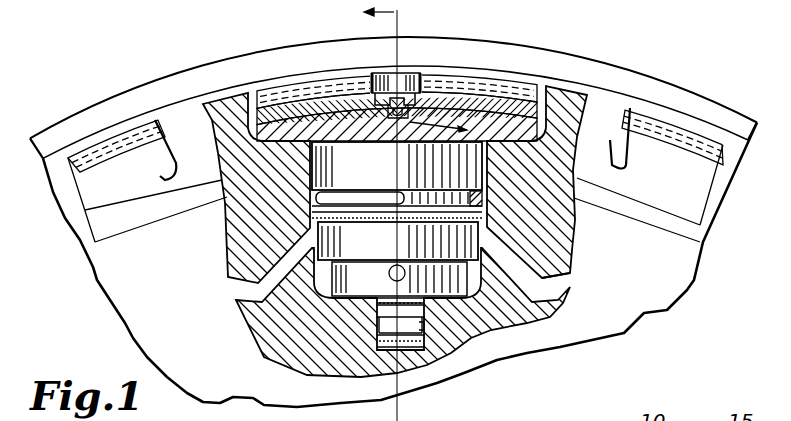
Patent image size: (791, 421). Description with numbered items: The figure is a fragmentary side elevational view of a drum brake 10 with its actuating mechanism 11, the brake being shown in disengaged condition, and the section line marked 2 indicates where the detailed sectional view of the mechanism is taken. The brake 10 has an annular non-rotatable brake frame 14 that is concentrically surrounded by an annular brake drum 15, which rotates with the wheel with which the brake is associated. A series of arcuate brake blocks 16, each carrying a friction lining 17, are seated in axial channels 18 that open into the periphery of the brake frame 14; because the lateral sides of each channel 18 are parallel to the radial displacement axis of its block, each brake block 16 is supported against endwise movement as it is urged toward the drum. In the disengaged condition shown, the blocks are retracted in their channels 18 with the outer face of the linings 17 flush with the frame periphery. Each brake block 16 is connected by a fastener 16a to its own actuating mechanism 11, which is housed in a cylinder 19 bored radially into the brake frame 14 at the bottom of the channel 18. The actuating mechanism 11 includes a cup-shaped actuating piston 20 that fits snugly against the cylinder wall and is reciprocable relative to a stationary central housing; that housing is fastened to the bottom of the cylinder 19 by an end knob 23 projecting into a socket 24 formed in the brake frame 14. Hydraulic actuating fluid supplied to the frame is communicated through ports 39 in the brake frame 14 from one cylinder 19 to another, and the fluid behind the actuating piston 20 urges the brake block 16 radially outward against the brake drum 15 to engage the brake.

The section line 2- 2 is at (368, 212).
The drum brake 10 is at (672, 44).
The actuating mechanism 11 is at (353, 171).
The brake frame 14 is at (660, 292).
The brake drum 15 is at (690, 108).
The brake block 16 is at (504, 98).
The fastener 16a is at (392, 78).
The friction lining 17 is at (284, 88).
The axial channel 18 is at (297, 143).
The cylinder 19 is at (527, 336).
The actuating piston 20 is at (396, 163).
The end knob 23 is at (412, 355).
The socket 24 is at (427, 338).
The port 39 is at (574, 277).